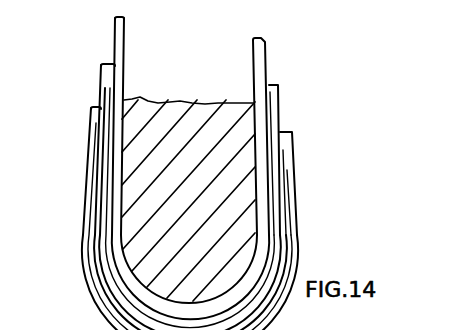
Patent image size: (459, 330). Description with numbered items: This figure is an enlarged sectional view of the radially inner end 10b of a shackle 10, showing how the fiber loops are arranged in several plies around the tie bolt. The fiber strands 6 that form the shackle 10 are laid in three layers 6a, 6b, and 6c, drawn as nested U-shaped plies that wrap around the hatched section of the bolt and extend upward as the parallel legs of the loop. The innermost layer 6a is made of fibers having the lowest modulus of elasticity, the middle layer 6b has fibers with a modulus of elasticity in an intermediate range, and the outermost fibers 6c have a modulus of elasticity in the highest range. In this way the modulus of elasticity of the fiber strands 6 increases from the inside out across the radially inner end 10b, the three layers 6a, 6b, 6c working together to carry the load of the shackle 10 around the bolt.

The fiber strands 6 is at (102, 51).
The layer 6a is at (262, 57).
The layer 6b is at (273, 96).
The fibers 6c is at (291, 146).
The shackle 10 is at (201, 86).
The radially inner end 10b is at (258, 235).